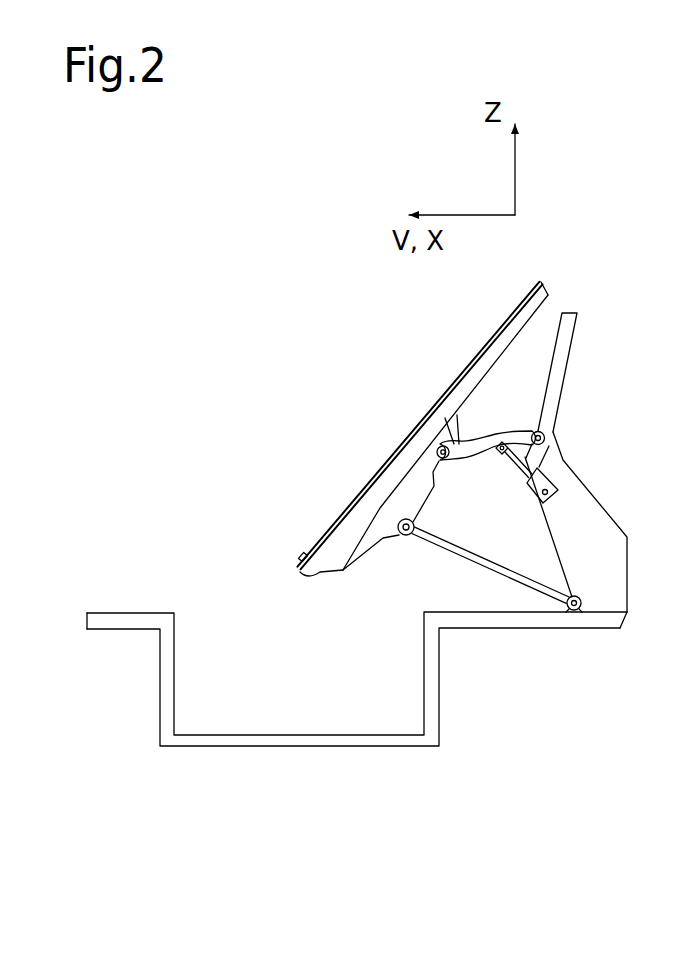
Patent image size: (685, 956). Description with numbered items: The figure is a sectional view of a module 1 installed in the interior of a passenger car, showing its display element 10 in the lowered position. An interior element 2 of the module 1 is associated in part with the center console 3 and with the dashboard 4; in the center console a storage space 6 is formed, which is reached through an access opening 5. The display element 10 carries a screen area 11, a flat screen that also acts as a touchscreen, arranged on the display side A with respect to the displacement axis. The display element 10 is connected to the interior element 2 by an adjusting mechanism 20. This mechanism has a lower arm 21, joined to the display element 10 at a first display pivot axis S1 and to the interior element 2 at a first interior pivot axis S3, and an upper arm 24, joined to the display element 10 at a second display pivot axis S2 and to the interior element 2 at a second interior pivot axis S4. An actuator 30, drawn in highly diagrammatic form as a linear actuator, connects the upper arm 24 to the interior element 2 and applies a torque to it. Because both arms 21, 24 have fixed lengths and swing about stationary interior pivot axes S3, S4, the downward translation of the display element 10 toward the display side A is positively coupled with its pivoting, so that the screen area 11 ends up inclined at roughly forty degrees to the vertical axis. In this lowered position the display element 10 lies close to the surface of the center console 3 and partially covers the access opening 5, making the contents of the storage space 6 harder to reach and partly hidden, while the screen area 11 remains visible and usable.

The module 1 is at (235, 420).
The interior element 2 is at (561, 495).
The center console 3 is at (126, 590).
The dashboard 4 is at (383, 427).
The access opening 5 is at (207, 603).
The storage space 6 is at (292, 667).
The display element 10 is at (300, 572).
The screen area 11 is at (391, 445).
The adjusting mechanism 20 is at (392, 567).
The lower arm 21 is at (502, 572).
The upper arm 24 is at (487, 438).
The actuator 30 is at (523, 465).
The display side A is at (310, 413).
The first display pivot axis S1 is at (407, 536).
The second display pivot axis S2 is at (439, 447).
The first interior pivot axis S3 is at (580, 609).
The second interior pivot axis S4 is at (550, 432).